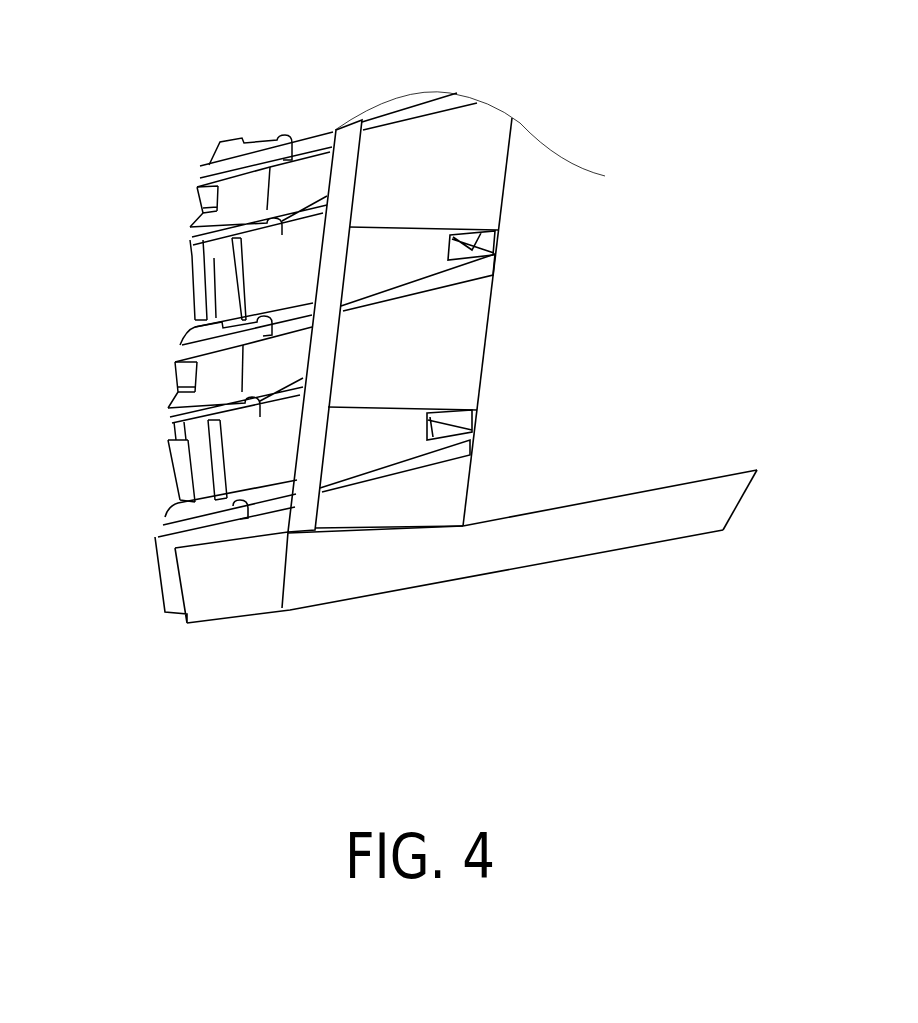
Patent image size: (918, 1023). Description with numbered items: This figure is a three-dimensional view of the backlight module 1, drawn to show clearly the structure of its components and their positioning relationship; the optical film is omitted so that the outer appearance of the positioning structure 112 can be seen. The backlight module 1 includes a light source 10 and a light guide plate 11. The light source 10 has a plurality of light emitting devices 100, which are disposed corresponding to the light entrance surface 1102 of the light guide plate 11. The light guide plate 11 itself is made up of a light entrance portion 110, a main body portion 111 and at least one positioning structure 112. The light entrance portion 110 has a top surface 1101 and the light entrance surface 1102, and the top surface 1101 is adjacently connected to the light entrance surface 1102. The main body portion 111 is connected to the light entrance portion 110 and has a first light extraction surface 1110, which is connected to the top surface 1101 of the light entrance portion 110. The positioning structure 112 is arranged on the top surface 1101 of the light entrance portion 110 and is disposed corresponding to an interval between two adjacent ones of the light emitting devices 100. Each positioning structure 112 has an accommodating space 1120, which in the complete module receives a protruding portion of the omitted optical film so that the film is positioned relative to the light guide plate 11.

The backlight module 1 is at (829, 65).
The light source 10 is at (180, 317).
The light emitting devices 100 is at (257, 375).
The light guide plate 11 is at (811, 682).
The light entrance portion 110 is at (432, 560).
The top surface 1101 is at (446, 496).
The light entrance surface 1102 is at (303, 578).
The main body portion 111 is at (650, 520).
The first light extraction surface 1110 is at (686, 478).
The positioning structure 112 is at (398, 257).
The accommodating space 1120 is at (473, 247).